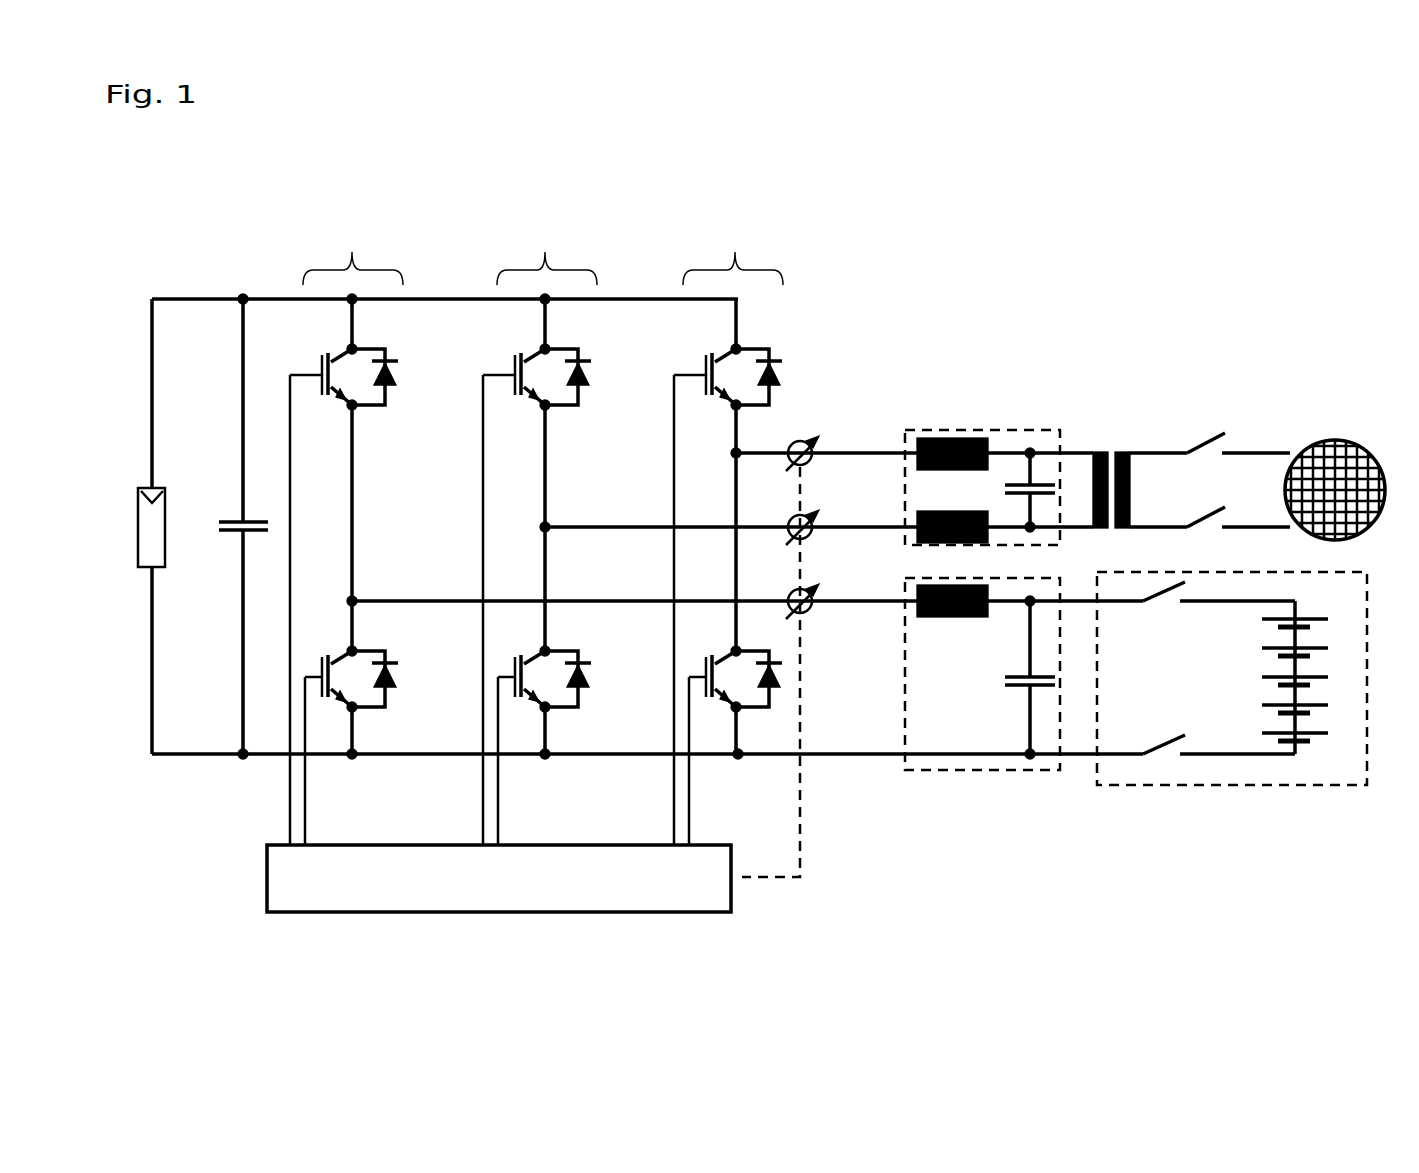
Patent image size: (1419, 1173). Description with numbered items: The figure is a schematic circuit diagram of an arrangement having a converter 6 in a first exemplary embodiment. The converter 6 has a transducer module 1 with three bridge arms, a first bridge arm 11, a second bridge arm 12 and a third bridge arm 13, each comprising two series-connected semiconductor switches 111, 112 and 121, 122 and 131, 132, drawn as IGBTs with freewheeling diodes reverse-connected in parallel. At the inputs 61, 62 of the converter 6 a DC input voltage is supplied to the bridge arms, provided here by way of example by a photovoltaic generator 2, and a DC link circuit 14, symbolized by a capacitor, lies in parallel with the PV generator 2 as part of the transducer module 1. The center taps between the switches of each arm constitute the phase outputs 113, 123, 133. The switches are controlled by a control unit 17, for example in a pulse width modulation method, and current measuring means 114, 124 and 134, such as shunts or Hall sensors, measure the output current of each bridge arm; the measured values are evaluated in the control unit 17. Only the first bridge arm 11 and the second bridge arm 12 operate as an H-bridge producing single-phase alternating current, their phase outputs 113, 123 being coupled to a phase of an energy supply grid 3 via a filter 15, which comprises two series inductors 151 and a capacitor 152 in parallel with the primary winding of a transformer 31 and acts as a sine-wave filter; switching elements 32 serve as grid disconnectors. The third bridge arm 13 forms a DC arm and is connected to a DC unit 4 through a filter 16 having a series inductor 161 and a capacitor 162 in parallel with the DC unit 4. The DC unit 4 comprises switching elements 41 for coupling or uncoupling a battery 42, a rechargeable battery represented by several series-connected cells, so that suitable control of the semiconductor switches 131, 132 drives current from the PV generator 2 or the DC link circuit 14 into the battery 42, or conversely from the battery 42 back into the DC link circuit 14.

The transducer module 1 is at (693, 221).
The photovoltaic (PV) generator 2 is at (137, 542).
The energy supply grid 3 is at (1350, 445).
The DC unit 4 is at (1363, 635).
The converter 6 is at (452, 200).
The first bridge arm 11 is at (733, 250).
The second bridge arm 12 is at (547, 248).
The third bridge arm 13 is at (353, 248).
The DC link circuit 14 is at (241, 518).
The filter 15 is at (995, 430).
The filter 16 is at (930, 778).
The control unit 17 is at (588, 913).
The transformer 31 is at (1118, 438).
The switching elements 32 is at (1208, 512).
The switching elements 41 is at (1157, 597).
The battery 42 is at (1320, 703).
The input 61 is at (178, 295).
The input 62 is at (170, 758).
The semiconductor switch 111 is at (725, 357).
The semiconductor switch 112 is at (708, 655).
The phase output 113 is at (740, 451).
The current measuring means 114 is at (823, 444).
The semiconductor switch 121 is at (533, 356).
The semiconductor switch 122 is at (517, 655).
The phase output 123 is at (550, 523).
The current measuring means 124 is at (813, 521).
The semiconductor switch 131 is at (341, 357).
The semiconductor switch 132 is at (325, 655).
The phase output 133 is at (358, 597).
The current measuring means 134 is at (815, 613).
The inductors 151 is at (967, 512).
The capacitor 152 is at (1040, 487).
The inductor 161 is at (962, 618).
The capacitor 162 is at (1033, 700).